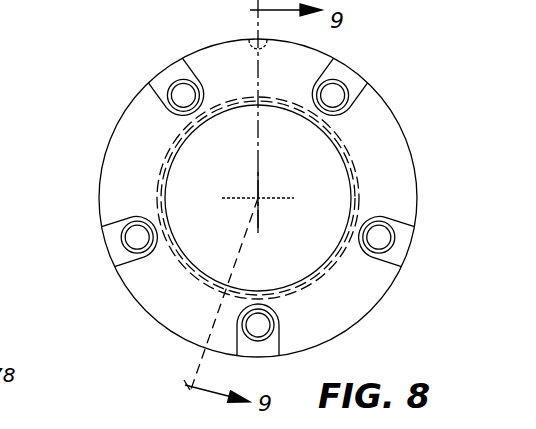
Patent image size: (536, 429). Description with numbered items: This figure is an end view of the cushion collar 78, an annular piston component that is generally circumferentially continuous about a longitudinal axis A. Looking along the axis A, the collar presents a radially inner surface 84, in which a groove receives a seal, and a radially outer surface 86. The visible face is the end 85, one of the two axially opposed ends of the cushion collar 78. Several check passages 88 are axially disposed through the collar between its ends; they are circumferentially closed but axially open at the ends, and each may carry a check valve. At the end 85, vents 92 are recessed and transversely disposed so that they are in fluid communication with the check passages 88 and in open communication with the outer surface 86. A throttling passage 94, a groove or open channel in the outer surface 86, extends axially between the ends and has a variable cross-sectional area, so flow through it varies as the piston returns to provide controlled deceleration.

The cushion collar 78 is at (95, 70).
The radially inner surface 84 is at (165, 190).
The end 85 is at (395, 157).
The radially outer surface 86 is at (110, 140).
The check passages 88 is at (322, 100).
The vents 92 is at (110, 227).
The throttling passage 94 is at (250, 38).
The longitudinal axis A is at (262, 200).